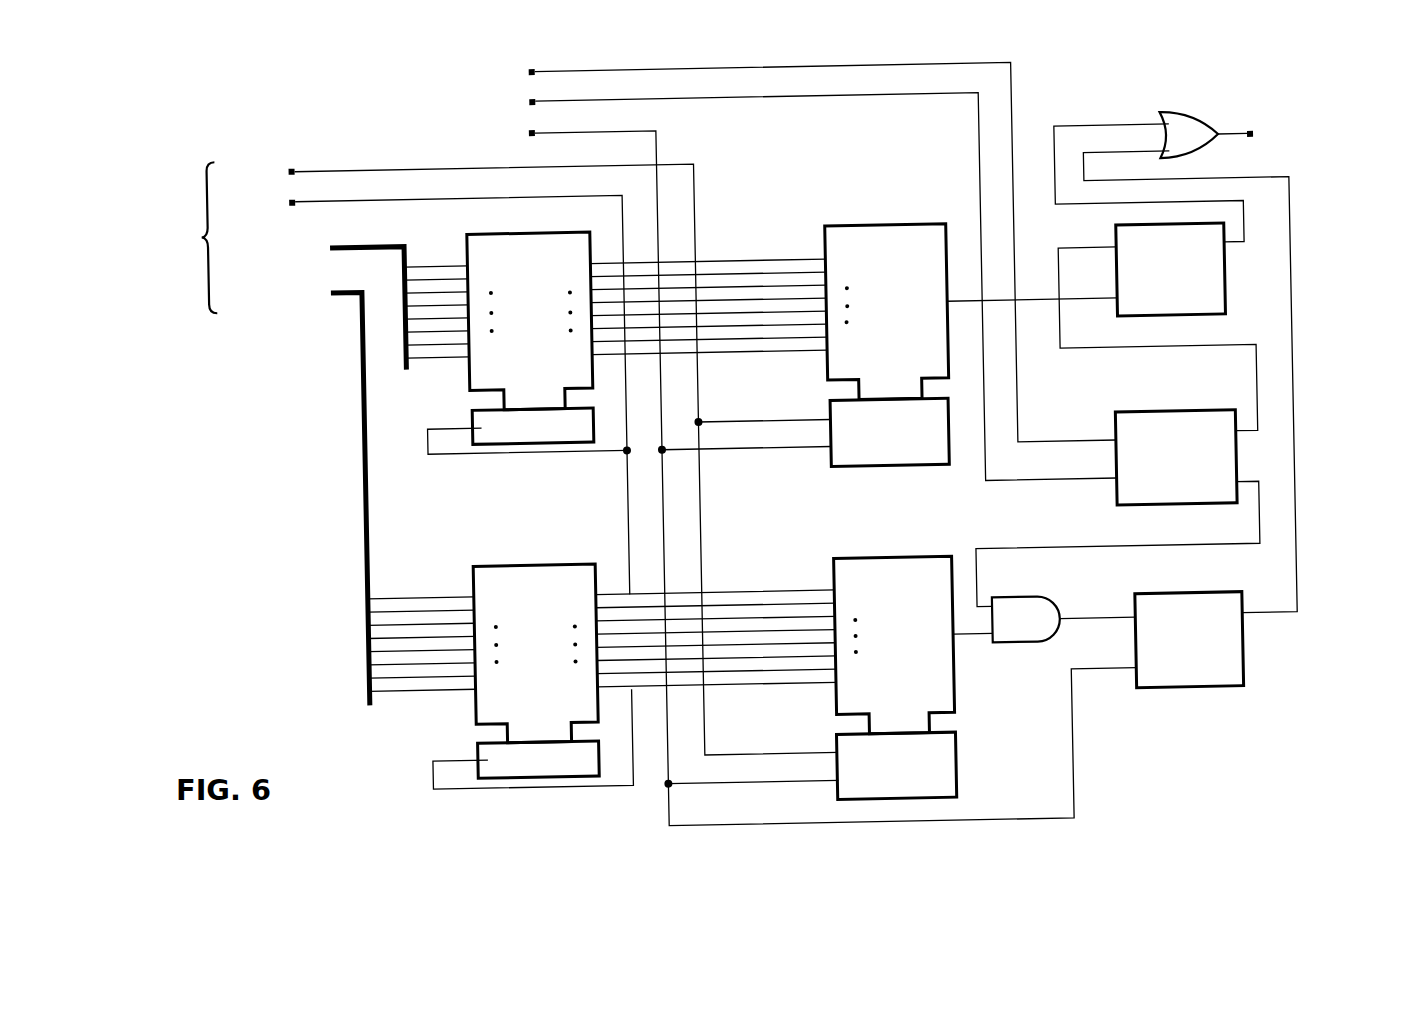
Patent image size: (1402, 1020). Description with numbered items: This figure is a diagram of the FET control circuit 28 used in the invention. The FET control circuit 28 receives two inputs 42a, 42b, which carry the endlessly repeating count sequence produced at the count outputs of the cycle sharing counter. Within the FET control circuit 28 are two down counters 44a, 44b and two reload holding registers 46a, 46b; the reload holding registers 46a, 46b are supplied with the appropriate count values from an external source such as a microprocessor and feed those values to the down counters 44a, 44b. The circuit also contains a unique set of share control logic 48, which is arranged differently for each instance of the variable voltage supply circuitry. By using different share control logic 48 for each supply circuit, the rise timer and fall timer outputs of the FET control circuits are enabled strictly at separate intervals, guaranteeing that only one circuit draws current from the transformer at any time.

The FET control circuit 28 is at (197, 70).
The input 42a is at (577, 69).
The input 42b is at (672, 93).
The down counter 44a is at (828, 378).
The down counter 44b is at (948, 695).
The reload holding register 46a is at (471, 371).
The reload holding register 46b is at (472, 576).
The share control logic 48 is at (1161, 421).